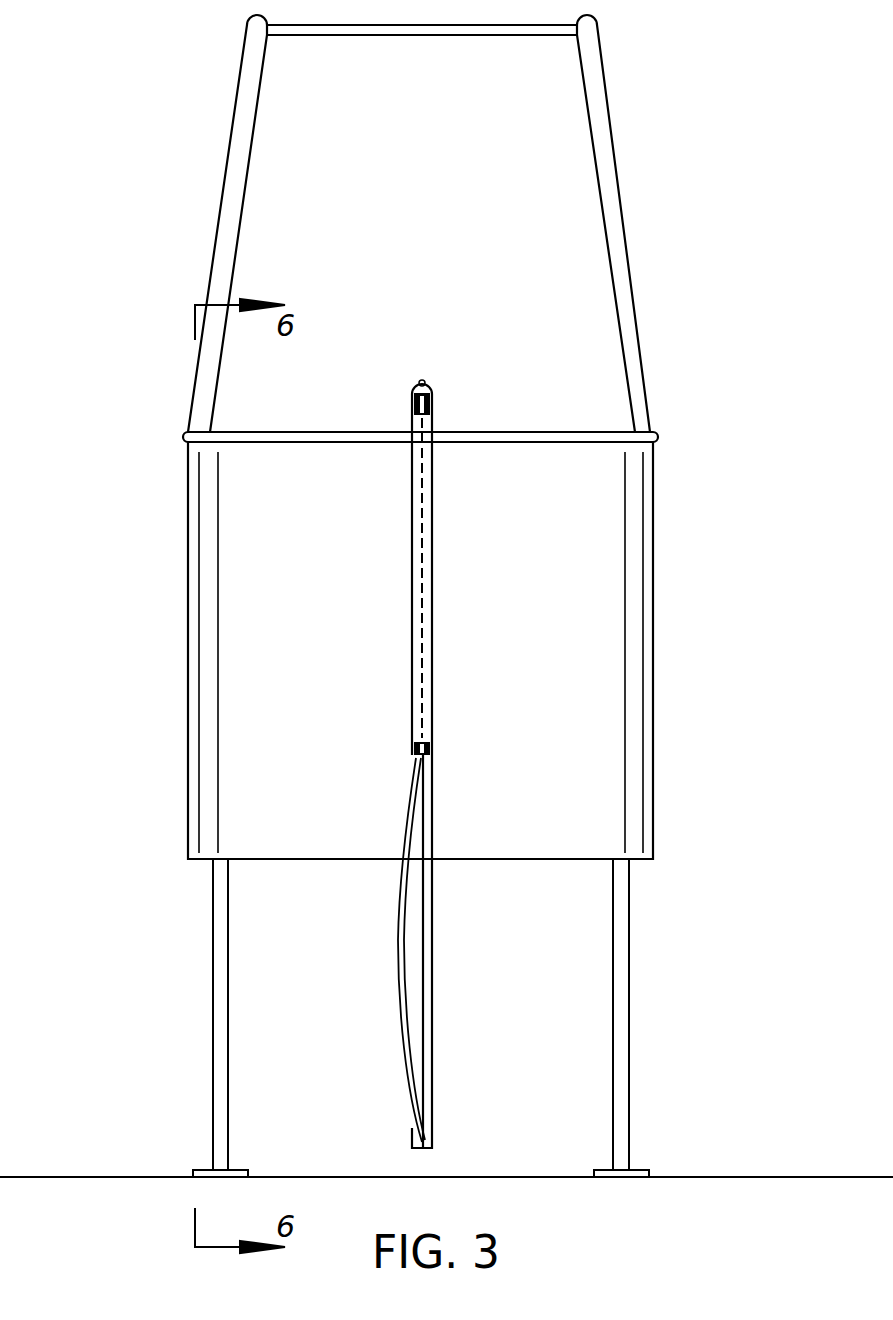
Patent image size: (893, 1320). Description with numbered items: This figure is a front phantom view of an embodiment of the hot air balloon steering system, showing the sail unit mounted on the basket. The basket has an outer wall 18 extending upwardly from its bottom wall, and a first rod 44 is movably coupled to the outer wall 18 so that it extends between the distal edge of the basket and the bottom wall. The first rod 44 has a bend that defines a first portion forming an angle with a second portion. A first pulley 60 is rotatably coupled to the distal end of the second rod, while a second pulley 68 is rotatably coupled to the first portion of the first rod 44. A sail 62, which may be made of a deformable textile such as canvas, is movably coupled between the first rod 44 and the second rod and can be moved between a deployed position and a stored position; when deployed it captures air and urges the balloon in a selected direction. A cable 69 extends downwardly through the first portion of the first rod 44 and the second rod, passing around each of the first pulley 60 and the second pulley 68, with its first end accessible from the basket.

The outer wall 18 is at (570, 715).
The first rod 44 is at (432, 562).
The first pulley 60 is at (432, 755).
The sail 62 is at (399, 928).
The second pulley 68 is at (431, 395).
The cable 69 is at (420, 662).